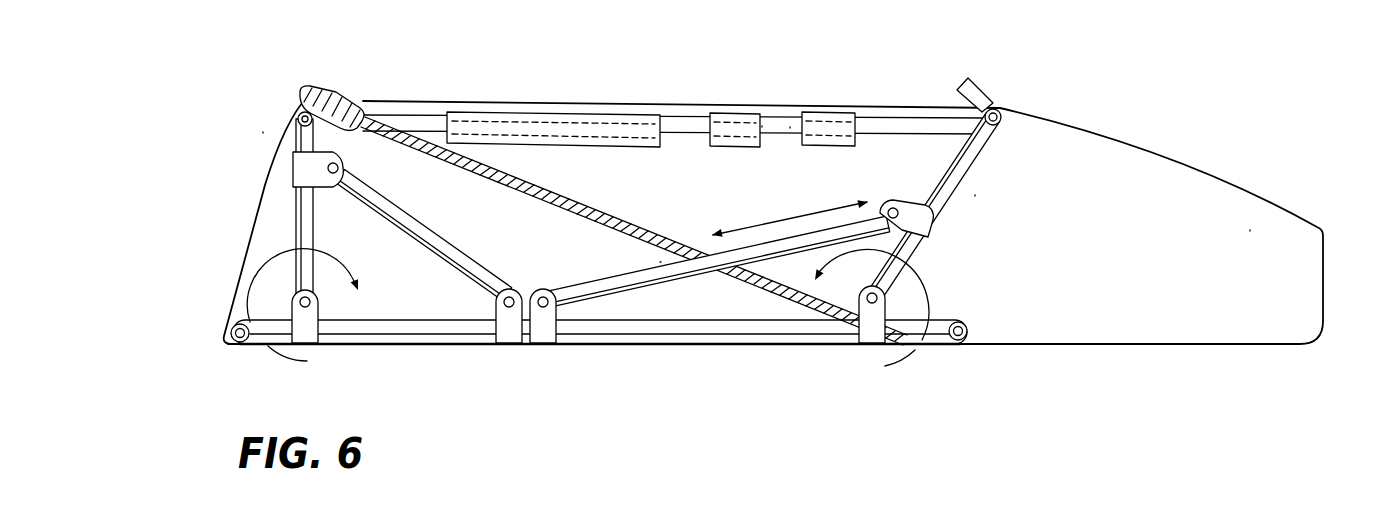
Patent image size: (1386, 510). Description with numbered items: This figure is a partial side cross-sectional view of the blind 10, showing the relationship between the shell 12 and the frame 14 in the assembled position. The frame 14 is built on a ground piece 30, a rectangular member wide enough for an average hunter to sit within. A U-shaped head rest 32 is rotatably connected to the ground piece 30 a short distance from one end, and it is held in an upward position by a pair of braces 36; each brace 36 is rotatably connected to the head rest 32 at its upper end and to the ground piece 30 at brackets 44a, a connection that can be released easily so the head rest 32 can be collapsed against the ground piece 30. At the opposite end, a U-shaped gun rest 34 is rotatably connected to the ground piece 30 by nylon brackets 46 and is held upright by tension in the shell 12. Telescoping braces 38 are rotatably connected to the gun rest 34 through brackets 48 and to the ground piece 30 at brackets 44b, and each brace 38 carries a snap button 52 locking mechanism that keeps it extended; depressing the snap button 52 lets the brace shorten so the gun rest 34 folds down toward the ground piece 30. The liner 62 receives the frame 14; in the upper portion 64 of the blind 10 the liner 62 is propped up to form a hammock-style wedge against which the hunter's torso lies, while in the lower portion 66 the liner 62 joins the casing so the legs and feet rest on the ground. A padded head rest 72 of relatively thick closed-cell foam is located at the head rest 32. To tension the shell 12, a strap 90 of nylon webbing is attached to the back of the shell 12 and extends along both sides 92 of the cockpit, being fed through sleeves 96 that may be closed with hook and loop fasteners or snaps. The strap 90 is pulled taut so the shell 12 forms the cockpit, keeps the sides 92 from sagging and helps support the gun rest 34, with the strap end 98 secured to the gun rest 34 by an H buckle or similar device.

The blind 10 is at (262, 126).
The shell 12 is at (1141, 143).
The frame 14 is at (975, 195).
The ground piece 30 is at (392, 348).
The head rest 32 is at (300, 237).
The gun rest 34 is at (983, 153).
The braces 36 is at (460, 255).
The telescoping braces 38 is at (775, 243).
The brackets 44a is at (500, 352).
The brackets 44b is at (545, 343).
The nylon brackets 46 is at (868, 340).
The brackets 48 is at (920, 230).
The snap button 52 is at (680, 262).
The liner 62 is at (574, 195).
The upper portion 64 is at (467, 93).
The lower portion 66 is at (1243, 145).
The padded head rest 72 is at (338, 95).
The strap 90 is at (790, 127).
The sides 92 is at (783, 193).
The sleeves 96 is at (530, 117).
The strap end 98 is at (976, 97).